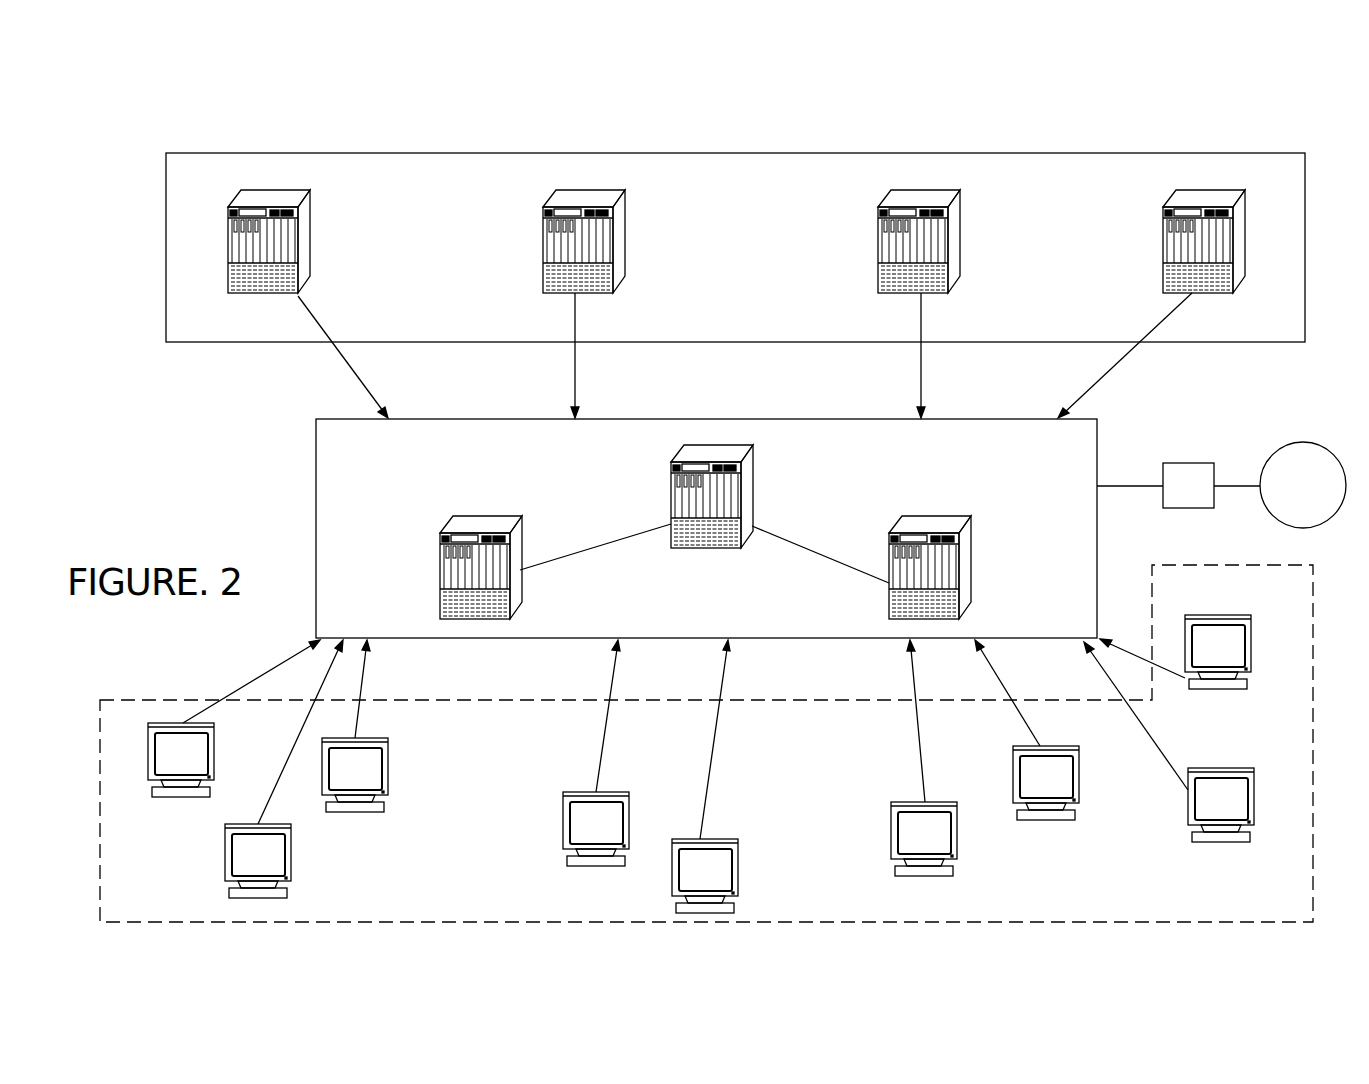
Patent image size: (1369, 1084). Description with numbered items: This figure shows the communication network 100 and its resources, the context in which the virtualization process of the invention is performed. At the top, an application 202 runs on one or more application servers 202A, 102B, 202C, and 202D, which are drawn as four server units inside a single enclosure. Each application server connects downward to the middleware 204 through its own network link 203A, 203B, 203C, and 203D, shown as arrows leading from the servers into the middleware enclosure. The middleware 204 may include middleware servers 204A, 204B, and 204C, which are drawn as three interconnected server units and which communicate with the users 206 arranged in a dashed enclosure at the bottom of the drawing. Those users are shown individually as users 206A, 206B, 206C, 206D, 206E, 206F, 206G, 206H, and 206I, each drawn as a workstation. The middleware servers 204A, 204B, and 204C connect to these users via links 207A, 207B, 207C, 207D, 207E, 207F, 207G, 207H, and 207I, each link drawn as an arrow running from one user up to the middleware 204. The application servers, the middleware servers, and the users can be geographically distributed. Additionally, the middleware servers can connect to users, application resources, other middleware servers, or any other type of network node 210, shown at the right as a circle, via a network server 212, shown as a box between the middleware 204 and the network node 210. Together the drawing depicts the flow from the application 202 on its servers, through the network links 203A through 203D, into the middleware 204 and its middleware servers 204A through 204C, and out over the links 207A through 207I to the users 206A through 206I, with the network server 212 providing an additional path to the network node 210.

The network system 100 is at (232, 111).
The application 202 is at (159, 242).
The application server 202A is at (308, 200).
The core router 102B is at (578, 190).
The application server 202C is at (960, 212).
The application server 202D is at (1177, 197).
The network link 203A is at (350, 369).
The network link 203B is at (575, 358).
The network link 203C is at (921, 358).
The network link 203D is at (1109, 370).
The middleware 204 is at (316, 538).
The middleware server 204A is at (728, 445).
The middleware server 204B is at (487, 516).
The middleware server 204C is at (940, 516).
The users 206 is at (492, 700).
The user 206A is at (158, 723).
The user 206B is at (225, 852).
The user 206C is at (350, 812).
The user 206D is at (595, 866).
The user 206E is at (706, 839).
The user 206F is at (915, 876).
The user 206G is at (1042, 820).
The user 206H is at (1215, 689).
The user 206I is at (1207, 768).
The link 207A is at (262, 675).
The link 207B is at (290, 755).
The link 207C is at (361, 690).
The link 207D is at (604, 740).
The link 207E is at (715, 733).
The link 207F is at (918, 730).
The link 207G is at (1025, 722).
The link 207H is at (1130, 653).
The link 207I is at (1156, 745).
The network node 210 is at (1281, 497).
The network server 212 is at (1178, 463).